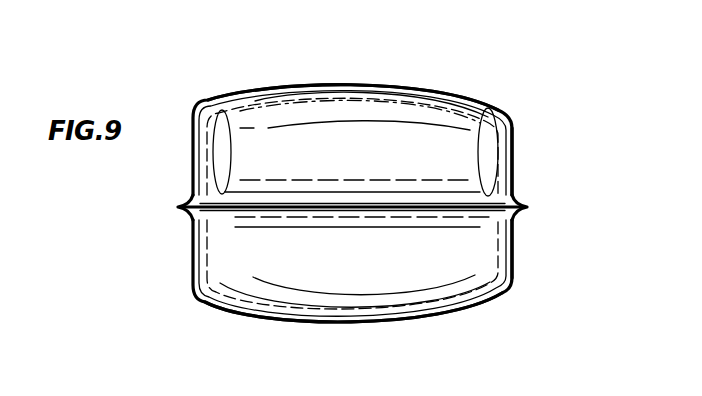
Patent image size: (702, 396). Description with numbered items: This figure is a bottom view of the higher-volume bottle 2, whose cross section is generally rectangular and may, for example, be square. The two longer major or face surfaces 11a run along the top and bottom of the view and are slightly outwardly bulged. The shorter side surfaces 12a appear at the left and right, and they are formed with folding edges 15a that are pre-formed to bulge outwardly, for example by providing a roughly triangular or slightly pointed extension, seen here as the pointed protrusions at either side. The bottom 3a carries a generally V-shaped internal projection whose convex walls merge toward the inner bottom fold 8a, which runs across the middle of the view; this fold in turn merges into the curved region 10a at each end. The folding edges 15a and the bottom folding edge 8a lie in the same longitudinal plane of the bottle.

The container body 2 is at (292, 80).
The bottom 3a is at (444, 135).
The inner bottom fold 8a is at (348, 205).
The curved region 10a is at (228, 150).
The major or face surfaces 11a is at (392, 84).
The side surfaces 12a is at (515, 160).
The folding edges 15a is at (185, 203).